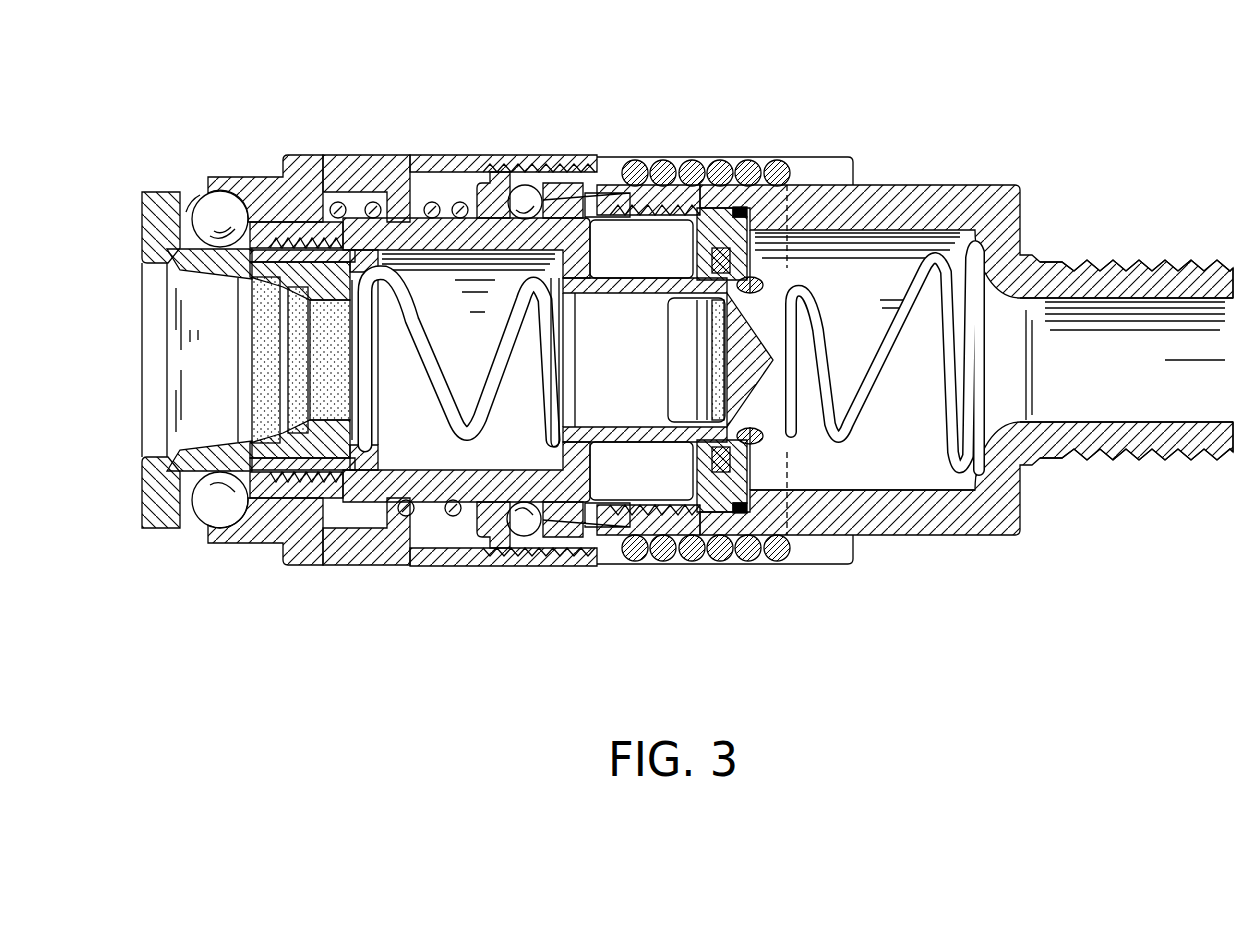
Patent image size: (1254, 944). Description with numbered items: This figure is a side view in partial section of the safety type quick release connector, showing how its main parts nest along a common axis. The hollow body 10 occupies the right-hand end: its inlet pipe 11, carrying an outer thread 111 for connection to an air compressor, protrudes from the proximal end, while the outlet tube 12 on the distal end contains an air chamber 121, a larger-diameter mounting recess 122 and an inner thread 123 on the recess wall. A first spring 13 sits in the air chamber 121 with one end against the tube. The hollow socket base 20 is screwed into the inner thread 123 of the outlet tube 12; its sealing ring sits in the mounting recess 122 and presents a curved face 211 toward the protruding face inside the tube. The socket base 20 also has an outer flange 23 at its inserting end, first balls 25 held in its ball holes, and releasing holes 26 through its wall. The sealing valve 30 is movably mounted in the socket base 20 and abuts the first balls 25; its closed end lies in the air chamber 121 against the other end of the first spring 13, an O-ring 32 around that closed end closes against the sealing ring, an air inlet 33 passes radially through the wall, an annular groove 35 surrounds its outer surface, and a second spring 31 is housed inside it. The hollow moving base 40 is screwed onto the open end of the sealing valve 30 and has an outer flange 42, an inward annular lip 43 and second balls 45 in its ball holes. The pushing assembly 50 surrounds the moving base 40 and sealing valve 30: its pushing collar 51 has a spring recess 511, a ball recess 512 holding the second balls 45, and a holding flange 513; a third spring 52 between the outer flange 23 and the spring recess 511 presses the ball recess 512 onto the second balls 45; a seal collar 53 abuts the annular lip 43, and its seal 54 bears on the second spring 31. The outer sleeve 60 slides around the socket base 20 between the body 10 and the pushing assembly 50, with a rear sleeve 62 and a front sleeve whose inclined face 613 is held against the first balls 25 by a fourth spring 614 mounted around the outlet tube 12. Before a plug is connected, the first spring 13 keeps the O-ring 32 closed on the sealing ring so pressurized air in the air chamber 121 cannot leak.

The body 10 is at (1062, 152).
The inlet pipe 11 is at (1170, 290).
The outer thread 111 is at (1103, 262).
The outlet tube 12 is at (920, 182).
The air chamber 121 is at (913, 478).
The mounting recess 122 is at (723, 500).
The inner thread 123 is at (677, 500).
The first spring 13 is at (960, 398).
The socket base 20 is at (670, 196).
The curved face 211 is at (748, 231).
The outer flange 23 is at (516, 530).
The first balls 25 is at (523, 186).
The releasing holes 26 is at (612, 193).
The sealing valve 30 is at (458, 500).
The second spring 31 is at (545, 336).
The O-ring 32 is at (762, 446).
The air inlet 33 is at (671, 389).
The annular groove 35 is at (431, 201).
The moving base 40 is at (150, 167).
The outer flange 42 is at (150, 529).
The annular lip 43 is at (178, 262).
The second balls 45 is at (218, 512).
The pushing assembly 50 is at (249, 98).
The pushing collar 51 is at (240, 191).
The spring recess 511 is at (366, 196).
The ball recess 512 is at (186, 212).
The holding flange 513 is at (390, 196).
The third spring 52 is at (336, 203).
The seal collar 53 is at (195, 460).
The seal 54 is at (300, 499).
The outer sleeve 60 is at (352, 608).
The inclined face 613 is at (528, 528).
The fourth spring 614 is at (750, 160).
The rear sleeve 62 is at (396, 553).